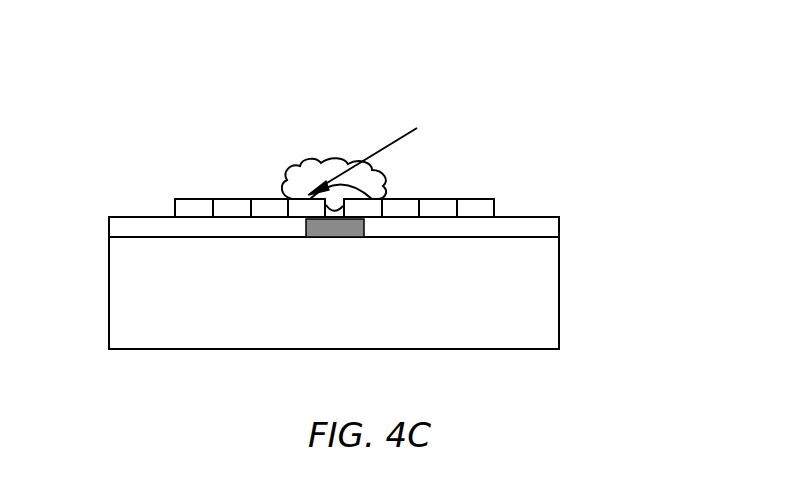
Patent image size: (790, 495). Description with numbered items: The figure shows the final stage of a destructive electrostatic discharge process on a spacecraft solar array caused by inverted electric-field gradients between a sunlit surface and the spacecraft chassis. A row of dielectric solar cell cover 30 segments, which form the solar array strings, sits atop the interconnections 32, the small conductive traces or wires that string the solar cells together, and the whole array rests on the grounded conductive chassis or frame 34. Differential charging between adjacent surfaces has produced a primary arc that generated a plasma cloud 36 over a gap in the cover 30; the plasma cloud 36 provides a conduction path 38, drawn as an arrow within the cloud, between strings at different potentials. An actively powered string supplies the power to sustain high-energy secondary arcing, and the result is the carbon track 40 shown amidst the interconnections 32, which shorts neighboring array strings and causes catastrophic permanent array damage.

The solar cell cover 30 is at (477, 207).
The interconnections 32 is at (129, 227).
The conductive chassis or frame 34 is at (556, 318).
The plasma cloud 36 is at (290, 173).
The conduction path 38 is at (382, 146).
The carbon track 40 is at (335, 237).